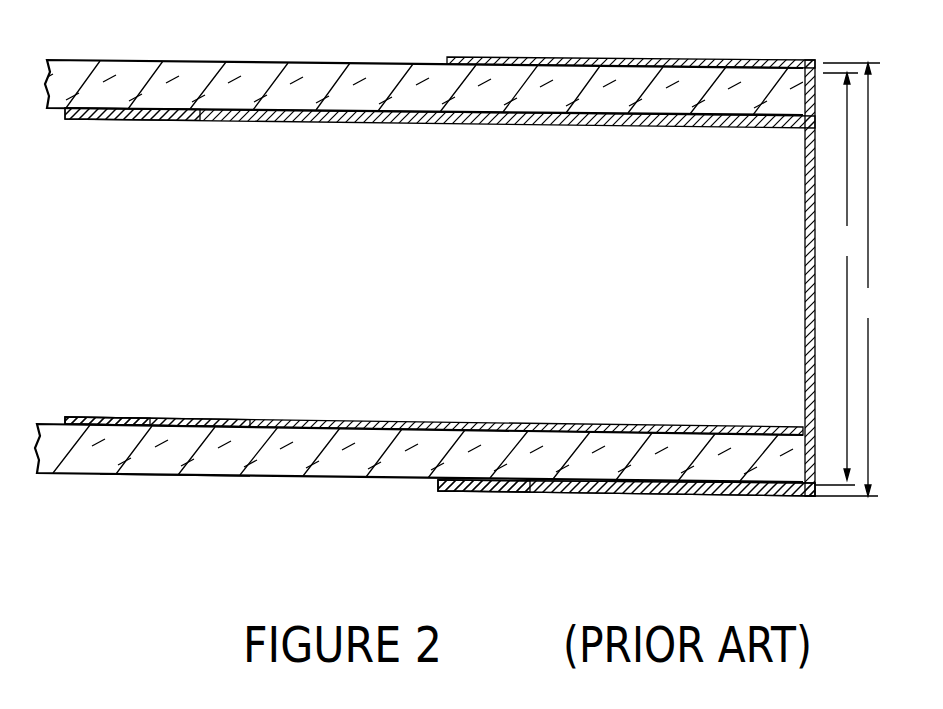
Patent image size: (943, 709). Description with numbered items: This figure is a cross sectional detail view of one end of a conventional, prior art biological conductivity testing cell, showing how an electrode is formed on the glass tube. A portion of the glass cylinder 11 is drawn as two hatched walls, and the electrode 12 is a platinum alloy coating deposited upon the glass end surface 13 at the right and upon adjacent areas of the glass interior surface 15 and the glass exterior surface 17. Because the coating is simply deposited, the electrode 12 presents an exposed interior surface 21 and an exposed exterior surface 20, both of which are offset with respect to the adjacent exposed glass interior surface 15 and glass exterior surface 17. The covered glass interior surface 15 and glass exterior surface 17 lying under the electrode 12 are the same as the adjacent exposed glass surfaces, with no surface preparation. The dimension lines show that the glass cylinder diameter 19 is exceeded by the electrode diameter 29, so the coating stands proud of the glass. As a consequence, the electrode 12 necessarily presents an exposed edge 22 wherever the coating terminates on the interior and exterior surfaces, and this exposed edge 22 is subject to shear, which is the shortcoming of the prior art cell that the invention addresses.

The glass cylinder 11 is at (210, 72).
The electrode 12 is at (258, 118).
The glass end surface 13 is at (805, 255).
The glass interior surface 15 is at (50, 110).
The glass exterior surface 17 is at (447, 62).
The glass cylinder diameter 19 is at (840, 279).
The exposed exterior surface 20 is at (588, 494).
The exposed interior surface 21 is at (368, 424).
The exposed edge 22 is at (65, 420).
The electrode diameter 29 is at (851, 279).